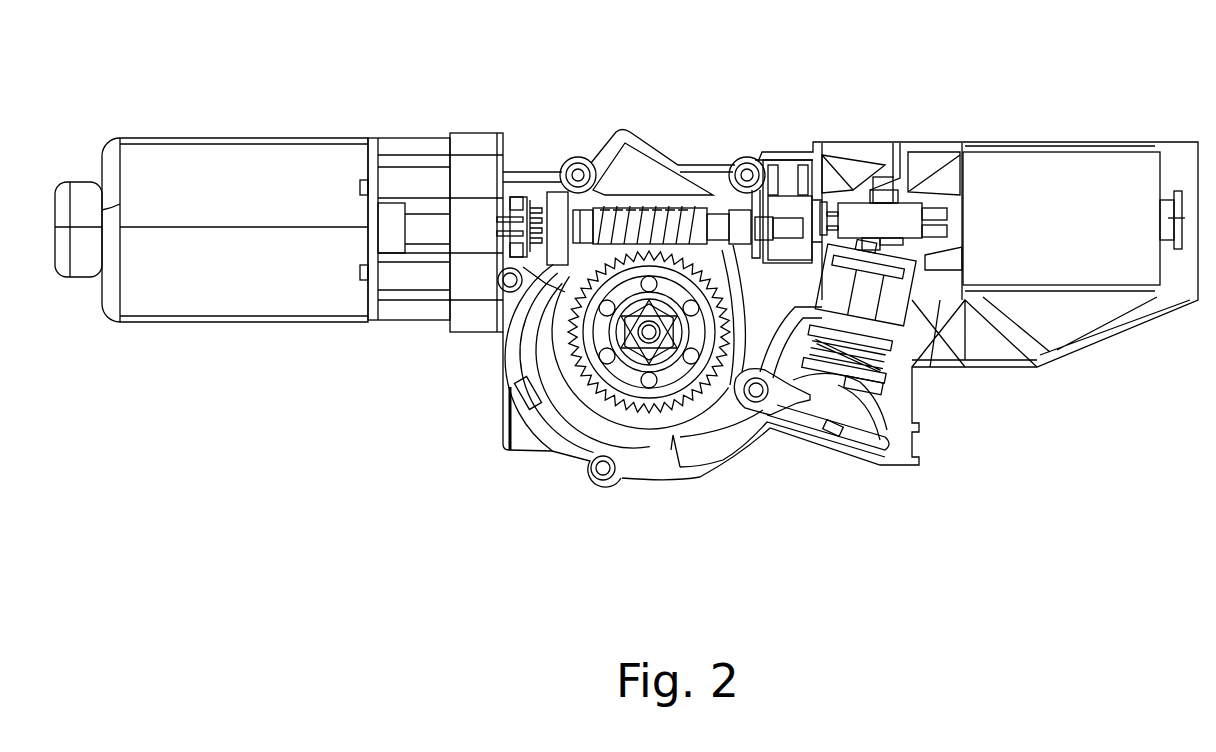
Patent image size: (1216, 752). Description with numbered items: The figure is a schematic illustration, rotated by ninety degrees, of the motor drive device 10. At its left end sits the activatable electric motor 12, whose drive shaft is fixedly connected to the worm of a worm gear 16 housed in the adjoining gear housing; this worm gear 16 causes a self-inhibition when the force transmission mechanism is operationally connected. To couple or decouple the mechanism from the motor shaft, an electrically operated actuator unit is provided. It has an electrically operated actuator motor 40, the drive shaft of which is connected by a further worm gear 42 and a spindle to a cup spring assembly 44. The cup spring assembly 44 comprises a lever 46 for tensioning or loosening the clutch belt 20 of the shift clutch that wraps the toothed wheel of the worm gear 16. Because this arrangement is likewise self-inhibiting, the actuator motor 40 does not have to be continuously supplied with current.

The motor drive device 10 is at (392, 61).
The electric motor 12 is at (242, 290).
The worm gear 16 is at (690, 140).
The clutch belt 20 is at (662, 420).
The actuator motor 40 is at (1078, 233).
The further worm gear 42 is at (886, 226).
The cup spring assembly 44 is at (882, 362).
The lever 46 is at (852, 415).